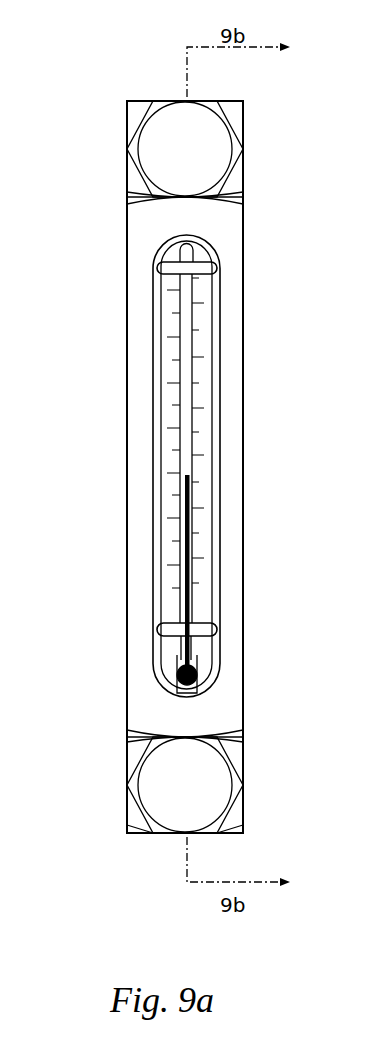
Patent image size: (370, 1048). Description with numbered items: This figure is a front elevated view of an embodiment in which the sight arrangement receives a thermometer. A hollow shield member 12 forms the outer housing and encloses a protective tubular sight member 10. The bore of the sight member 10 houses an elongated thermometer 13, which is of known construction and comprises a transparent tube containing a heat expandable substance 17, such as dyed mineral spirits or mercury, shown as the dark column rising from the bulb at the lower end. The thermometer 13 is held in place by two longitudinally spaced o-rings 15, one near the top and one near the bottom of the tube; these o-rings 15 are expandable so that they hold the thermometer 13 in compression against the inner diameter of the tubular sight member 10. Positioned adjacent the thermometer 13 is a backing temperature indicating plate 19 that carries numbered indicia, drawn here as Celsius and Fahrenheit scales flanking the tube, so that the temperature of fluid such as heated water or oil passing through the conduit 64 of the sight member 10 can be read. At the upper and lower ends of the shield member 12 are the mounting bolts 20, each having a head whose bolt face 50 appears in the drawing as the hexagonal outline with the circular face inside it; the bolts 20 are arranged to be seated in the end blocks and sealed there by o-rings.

The sight member 10 is at (215, 592).
The hollow shield member 12 is at (142, 557).
The thermometer 13 is at (183, 442).
The o-rings 15 is at (157, 268).
The heat expandable substance 17 is at (177, 672).
The backing temperature indicating plate 19 is at (167, 362).
The mounting bolt 20 is at (243, 825).
The bolt face 50 is at (172, 785).
The conduit 64 is at (217, 548).